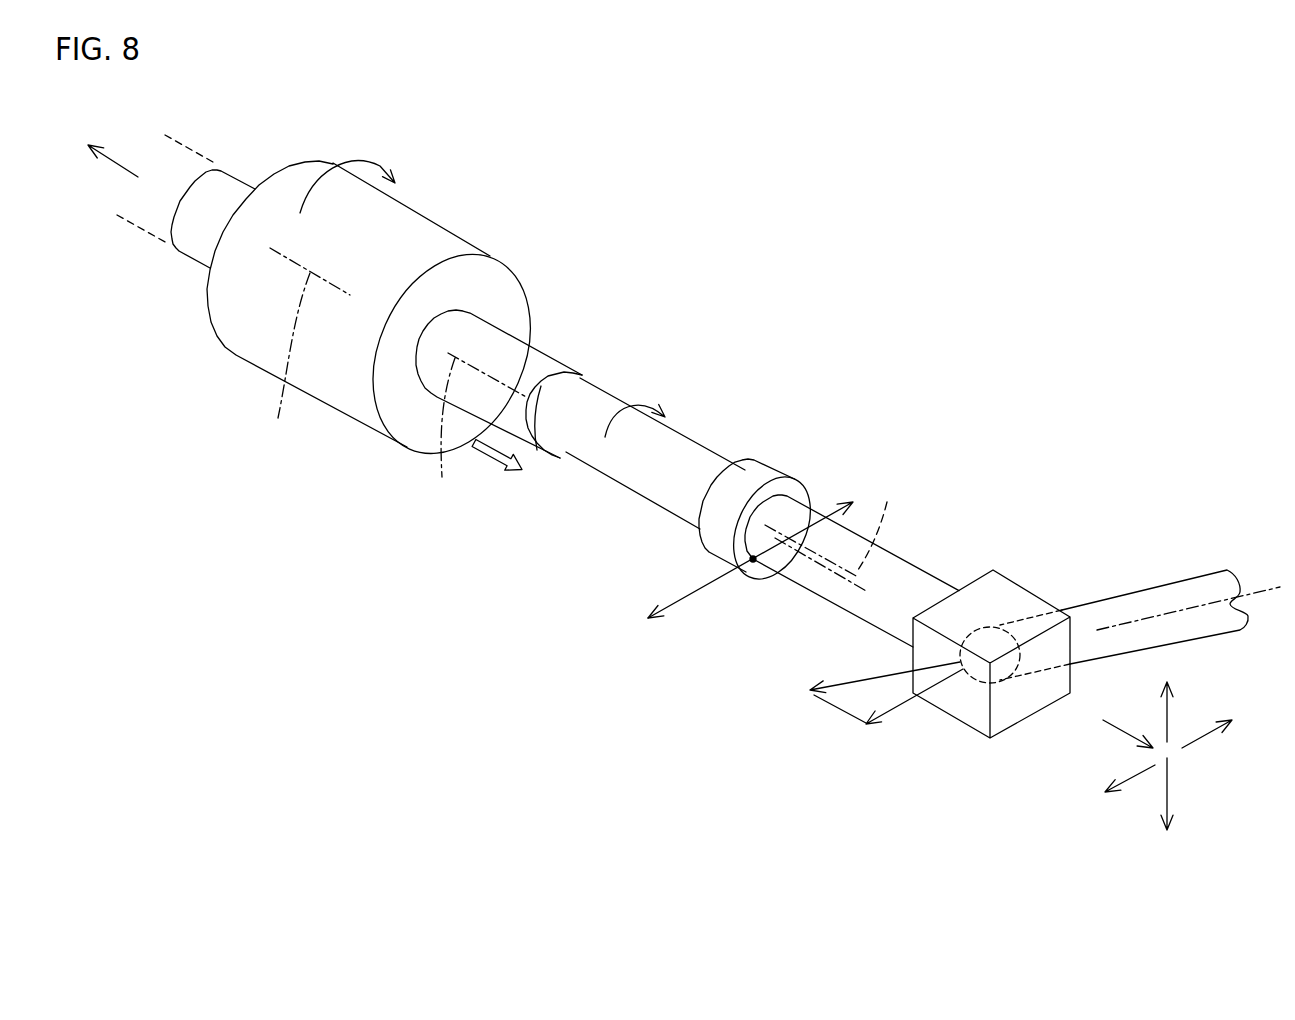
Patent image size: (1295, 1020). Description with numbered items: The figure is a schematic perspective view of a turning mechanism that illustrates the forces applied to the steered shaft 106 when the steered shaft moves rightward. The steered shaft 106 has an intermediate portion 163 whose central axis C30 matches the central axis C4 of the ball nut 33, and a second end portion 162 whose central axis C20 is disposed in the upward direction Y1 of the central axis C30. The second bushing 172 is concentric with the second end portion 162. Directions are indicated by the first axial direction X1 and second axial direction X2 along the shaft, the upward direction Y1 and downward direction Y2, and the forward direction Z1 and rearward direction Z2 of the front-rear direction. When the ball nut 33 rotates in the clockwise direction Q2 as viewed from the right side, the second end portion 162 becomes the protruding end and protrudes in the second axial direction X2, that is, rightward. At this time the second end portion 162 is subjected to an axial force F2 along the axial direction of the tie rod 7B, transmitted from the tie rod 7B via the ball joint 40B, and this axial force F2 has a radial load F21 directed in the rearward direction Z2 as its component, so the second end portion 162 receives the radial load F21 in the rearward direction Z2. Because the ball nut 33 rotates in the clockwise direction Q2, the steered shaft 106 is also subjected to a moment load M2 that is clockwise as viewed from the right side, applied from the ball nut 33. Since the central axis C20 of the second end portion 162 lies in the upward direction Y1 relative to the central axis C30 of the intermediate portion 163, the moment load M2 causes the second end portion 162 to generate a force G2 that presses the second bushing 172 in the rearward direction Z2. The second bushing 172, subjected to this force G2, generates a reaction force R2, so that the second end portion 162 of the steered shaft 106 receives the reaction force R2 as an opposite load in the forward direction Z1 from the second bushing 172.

The first axial direction X1 is at (123, 168).
The clockwise direction Q2 is at (363, 155).
The ball nut 33 is at (428, 237).
The intermediate portion 163 is at (490, 340).
The steered shaft 106 is at (542, 361).
The moment load M2 is at (647, 400).
The second bushing 172 is at (752, 453).
The reaction force R2 is at (823, 518).
The central axis C20 is at (889, 495).
The second end portion 162 is at (920, 585).
The ball joint 40B is at (1010, 600).
The tie rod 7B is at (1145, 595).
The central axis C4 is at (301, 348).
The central axis C30 is at (803, 621).
The force G2 is at (692, 590).
The axial force F2 is at (848, 682).
The radial load F21 is at (900, 704).
The second axial direction X2 is at (1128, 725).
The upward direction Y1 is at (1170, 722).
The forward direction Z1 is at (1193, 747).
The downward direction Y2 is at (1170, 792).
The rearward direction Z2 is at (1140, 776).